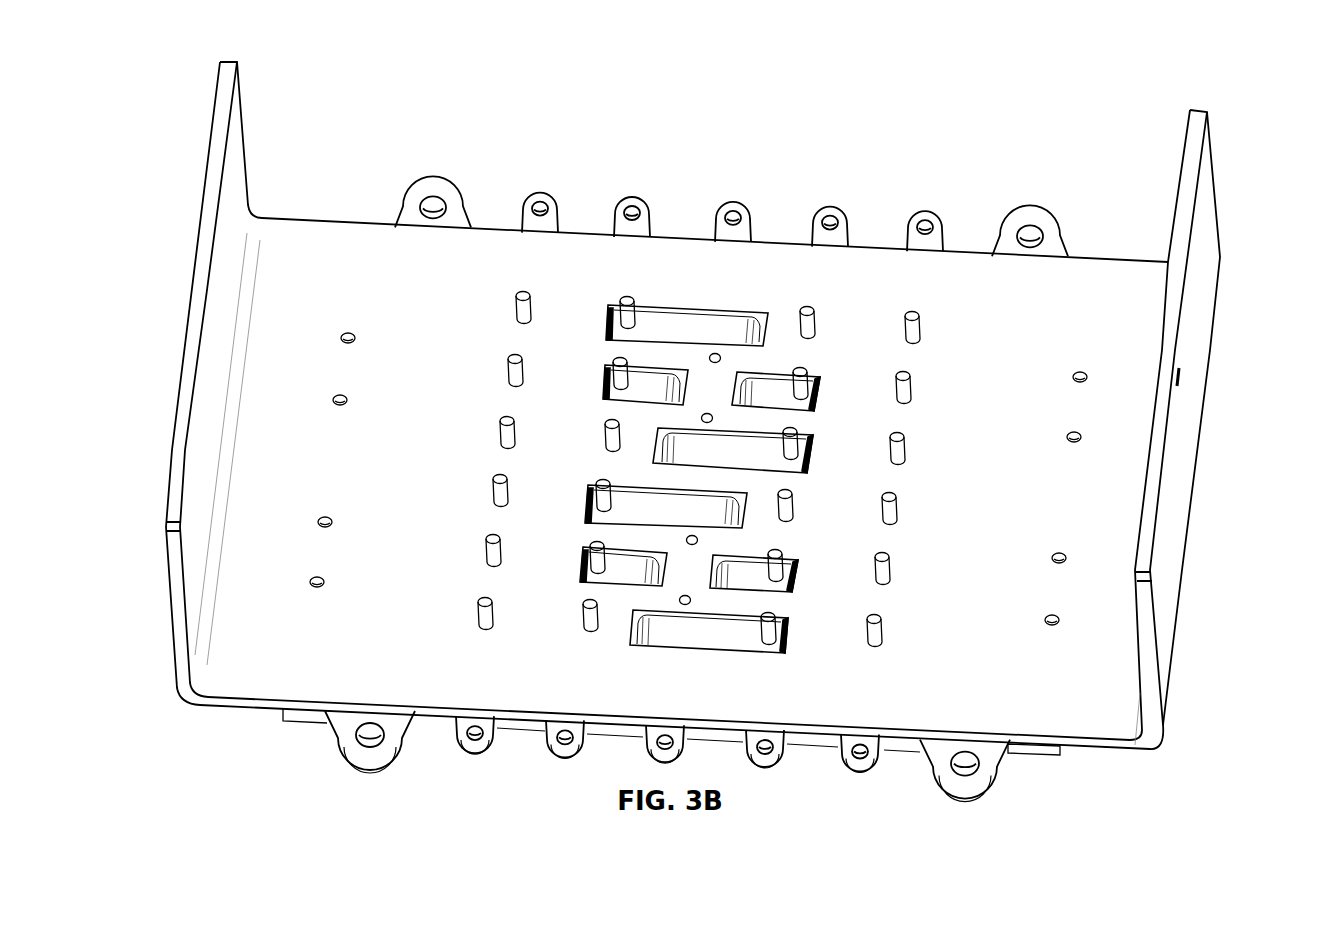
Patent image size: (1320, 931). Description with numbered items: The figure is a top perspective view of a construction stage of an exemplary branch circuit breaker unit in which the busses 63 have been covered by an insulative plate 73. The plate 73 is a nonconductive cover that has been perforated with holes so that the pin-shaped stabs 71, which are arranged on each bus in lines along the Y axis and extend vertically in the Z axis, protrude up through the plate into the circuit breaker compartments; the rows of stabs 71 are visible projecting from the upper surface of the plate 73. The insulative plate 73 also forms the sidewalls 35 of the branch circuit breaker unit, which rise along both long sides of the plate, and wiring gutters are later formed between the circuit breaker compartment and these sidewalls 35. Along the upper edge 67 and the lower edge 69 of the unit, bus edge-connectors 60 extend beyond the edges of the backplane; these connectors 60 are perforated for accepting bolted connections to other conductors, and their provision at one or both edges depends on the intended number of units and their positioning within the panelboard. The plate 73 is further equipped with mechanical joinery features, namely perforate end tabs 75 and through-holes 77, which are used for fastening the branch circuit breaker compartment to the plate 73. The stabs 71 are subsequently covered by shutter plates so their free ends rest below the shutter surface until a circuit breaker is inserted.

The sidewalls 35 is at (237, 138).
The bus edge-connectors 60 is at (667, 445).
The busses 63 is at (733, 195).
The upper edge 67 is at (1110, 257).
The lower edge 69 is at (1108, 750).
The stabs 71 is at (510, 360).
The insulative plate 73 is at (992, 661).
The perforate end tabs 75 is at (358, 750).
The through-holes 77 is at (341, 334).